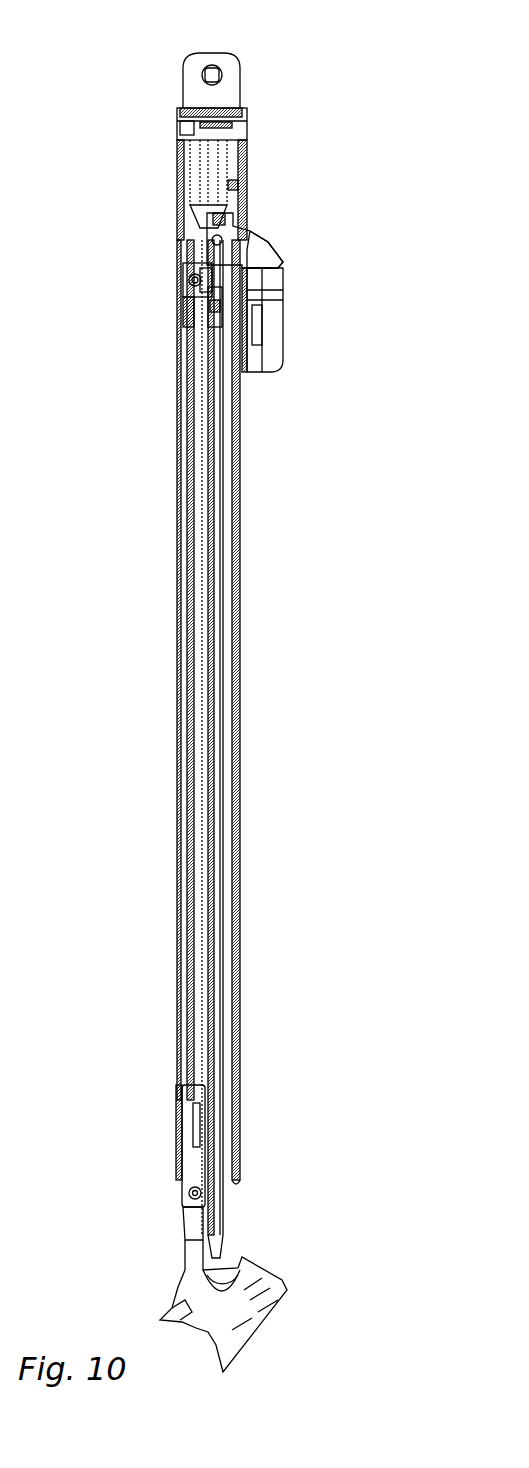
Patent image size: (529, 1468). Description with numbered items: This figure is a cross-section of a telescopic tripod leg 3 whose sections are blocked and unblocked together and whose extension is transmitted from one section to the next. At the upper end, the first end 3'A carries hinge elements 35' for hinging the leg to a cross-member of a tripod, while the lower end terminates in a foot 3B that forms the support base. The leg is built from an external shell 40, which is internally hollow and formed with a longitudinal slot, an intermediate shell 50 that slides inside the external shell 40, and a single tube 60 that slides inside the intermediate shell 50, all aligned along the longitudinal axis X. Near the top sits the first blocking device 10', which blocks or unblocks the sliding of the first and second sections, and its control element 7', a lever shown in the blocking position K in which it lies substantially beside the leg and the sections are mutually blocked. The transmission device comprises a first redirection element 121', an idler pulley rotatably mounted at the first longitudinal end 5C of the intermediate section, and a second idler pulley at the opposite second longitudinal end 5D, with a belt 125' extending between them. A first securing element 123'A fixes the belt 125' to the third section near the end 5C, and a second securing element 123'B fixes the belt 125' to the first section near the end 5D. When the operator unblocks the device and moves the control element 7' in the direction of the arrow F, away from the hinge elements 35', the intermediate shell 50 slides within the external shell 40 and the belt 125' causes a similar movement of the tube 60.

The hinge elements 35' is at (259, 58).
The first end 3'A is at (283, 99).
The first blocking device 10' is at (302, 205).
The leg 3 is at (353, 189).
The first longitudinal end 5C is at (296, 278).
The control element 7' is at (313, 320).
The blocking position K is at (306, 413).
The first redirection element 121' is at (145, 271).
The belt 125' is at (138, 325).
The first securing element 123'A is at (121, 351).
The external shell 40 is at (178, 975).
The intermediate shell 50 is at (197, 1037).
The single tube 60 is at (213, 1110).
The second securing element 123'B is at (127, 1146).
The second longitudinal end 5D is at (268, 1232).
The foot 3B is at (218, 1295).
The longitudinal axis X is at (326, 660).
The arrow F is at (326, 965).